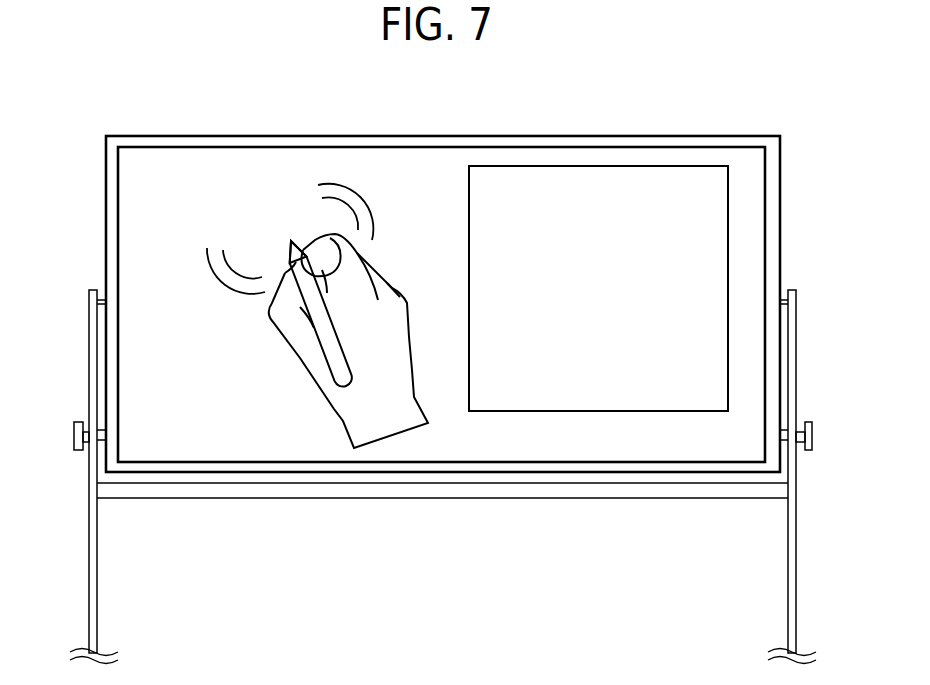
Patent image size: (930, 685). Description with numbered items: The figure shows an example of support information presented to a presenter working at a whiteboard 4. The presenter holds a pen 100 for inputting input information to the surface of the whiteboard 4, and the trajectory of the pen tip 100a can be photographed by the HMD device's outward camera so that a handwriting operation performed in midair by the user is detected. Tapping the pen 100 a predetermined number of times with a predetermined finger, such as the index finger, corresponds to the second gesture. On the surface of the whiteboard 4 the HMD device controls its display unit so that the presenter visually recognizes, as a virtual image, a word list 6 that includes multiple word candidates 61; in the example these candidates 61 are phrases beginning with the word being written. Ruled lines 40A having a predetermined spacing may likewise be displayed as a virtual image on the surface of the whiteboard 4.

The whiteboard 4 is at (105, 232).
The ruled lines 40A is at (143, 190).
The pen 100 is at (332, 340).
The pen tip 100a is at (290, 242).
The word list 6 is at (662, 165).
The word candidates 61 is at (685, 326).